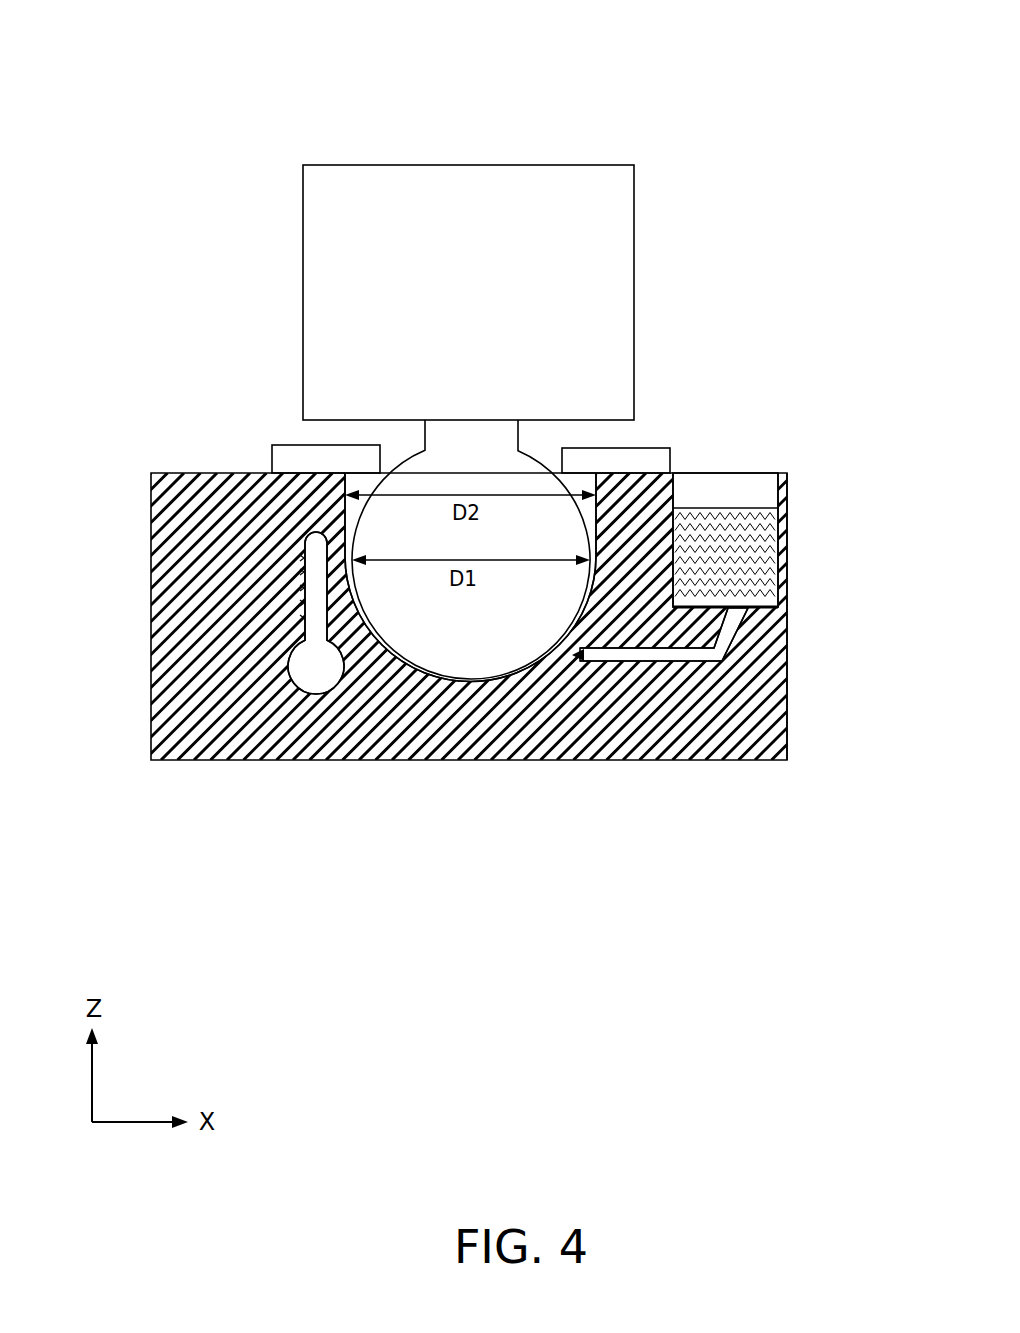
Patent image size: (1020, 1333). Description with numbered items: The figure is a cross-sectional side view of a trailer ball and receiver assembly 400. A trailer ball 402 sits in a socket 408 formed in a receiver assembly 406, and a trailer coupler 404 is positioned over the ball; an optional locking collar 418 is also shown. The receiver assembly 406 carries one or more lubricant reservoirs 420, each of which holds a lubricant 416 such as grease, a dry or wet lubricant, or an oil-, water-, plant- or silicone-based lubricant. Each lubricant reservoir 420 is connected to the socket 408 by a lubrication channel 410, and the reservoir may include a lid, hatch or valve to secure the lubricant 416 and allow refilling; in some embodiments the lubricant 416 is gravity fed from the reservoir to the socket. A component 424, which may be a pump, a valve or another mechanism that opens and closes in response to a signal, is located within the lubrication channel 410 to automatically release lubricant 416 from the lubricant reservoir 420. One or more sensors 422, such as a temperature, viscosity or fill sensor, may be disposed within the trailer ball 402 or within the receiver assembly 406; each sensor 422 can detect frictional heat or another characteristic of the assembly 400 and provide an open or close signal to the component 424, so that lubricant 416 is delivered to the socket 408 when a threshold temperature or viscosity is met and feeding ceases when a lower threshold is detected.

The trailer ball and receiver assembly 400 is at (265, 96).
The trailer ball 402 is at (480, 637).
The trailer coupler 404 is at (625, 248).
The receiver assembly 406 is at (167, 663).
The socket 408 is at (402, 682).
The lubrication channel 410 is at (788, 626).
The lubricant 416 is at (783, 537).
The locking collar 418 is at (295, 460).
The lubricant reservoir 420 is at (753, 489).
The sensor 422 is at (307, 573).
The component 424 is at (650, 657).